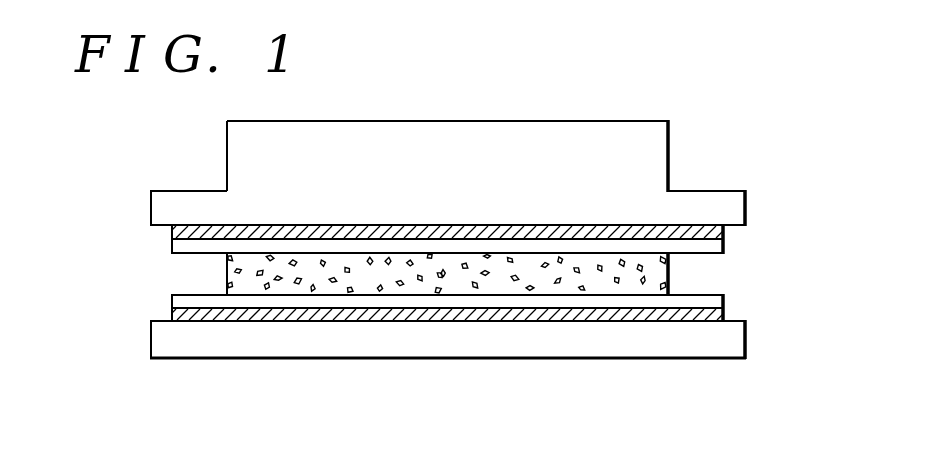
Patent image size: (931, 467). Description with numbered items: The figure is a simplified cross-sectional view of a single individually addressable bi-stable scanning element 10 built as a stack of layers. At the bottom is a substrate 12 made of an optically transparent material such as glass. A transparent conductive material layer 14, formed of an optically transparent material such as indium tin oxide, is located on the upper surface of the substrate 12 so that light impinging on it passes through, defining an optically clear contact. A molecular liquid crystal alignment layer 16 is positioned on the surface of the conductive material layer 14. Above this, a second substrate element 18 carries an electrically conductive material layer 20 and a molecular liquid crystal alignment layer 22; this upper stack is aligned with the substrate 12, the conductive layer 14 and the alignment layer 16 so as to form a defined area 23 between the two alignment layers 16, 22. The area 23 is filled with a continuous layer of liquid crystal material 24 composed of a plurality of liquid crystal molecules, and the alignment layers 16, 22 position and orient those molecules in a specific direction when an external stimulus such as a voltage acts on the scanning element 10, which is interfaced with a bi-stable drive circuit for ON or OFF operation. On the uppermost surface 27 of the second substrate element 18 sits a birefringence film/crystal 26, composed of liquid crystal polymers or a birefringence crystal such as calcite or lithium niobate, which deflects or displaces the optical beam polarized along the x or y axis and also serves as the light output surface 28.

The bi-stable scanning element 10 is at (838, 321).
The substrate 12 is at (733, 343).
The transparent conductive material layer 14 is at (178, 317).
The molecular liquid crystal alignment layer 16 is at (182, 303).
The second substrate element 18 is at (733, 211).
The electrically conductive material layer 20 is at (717, 239).
The molecular liquid crystal alignment layer 22 is at (712, 248).
The defined area 23 is at (428, 269).
The liquid crystal material 24 is at (650, 278).
The birefringence film/crystal 26 is at (649, 151).
The uppermost surface 27 is at (718, 191).
The light output surface 28 is at (518, 122).